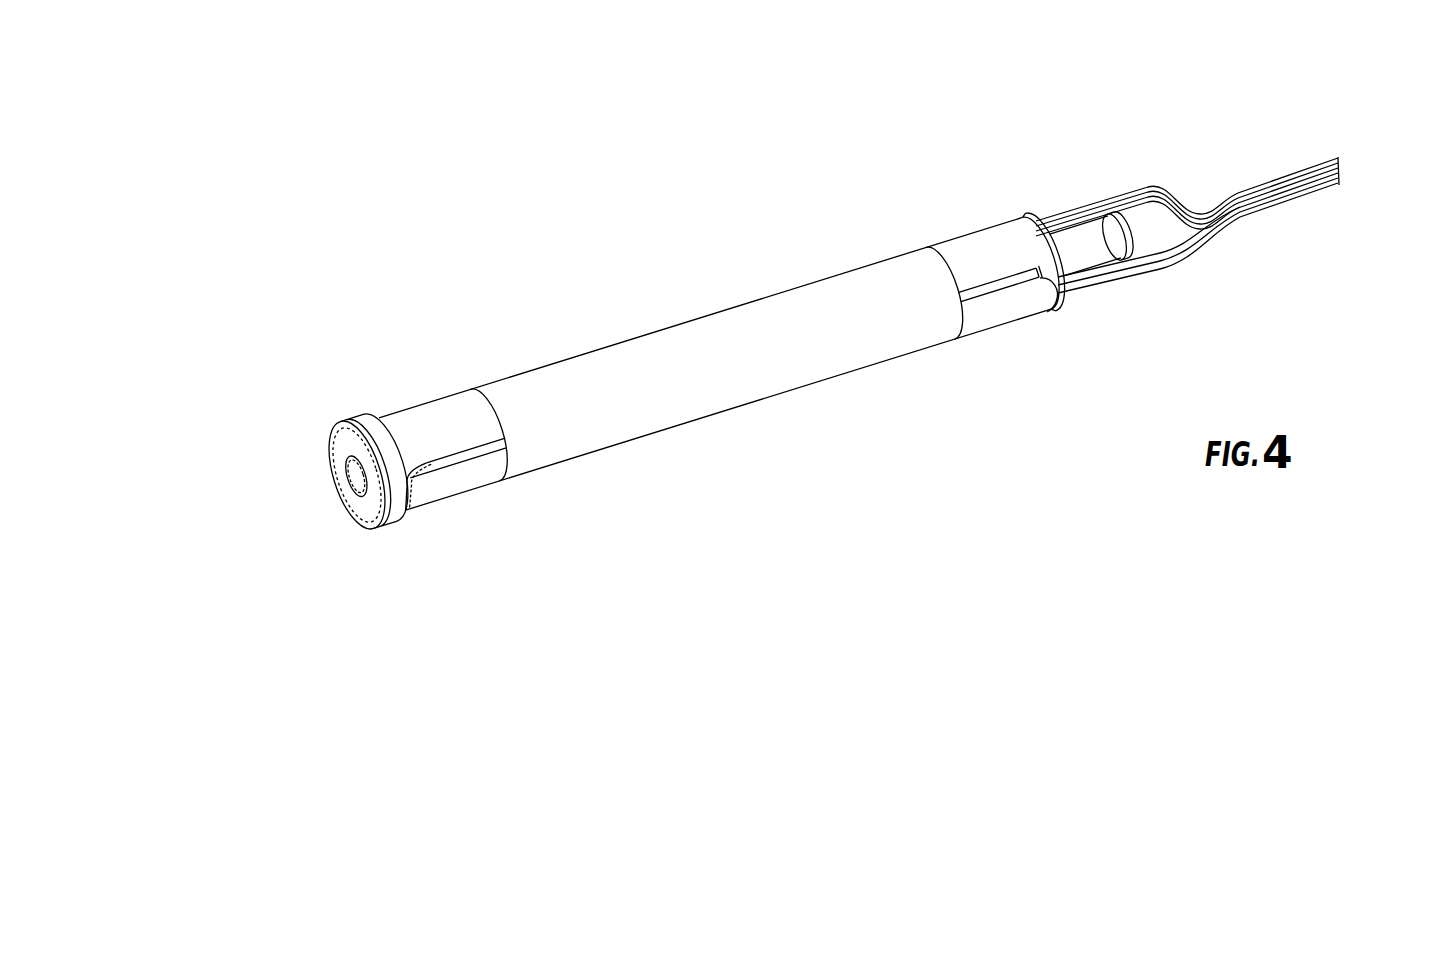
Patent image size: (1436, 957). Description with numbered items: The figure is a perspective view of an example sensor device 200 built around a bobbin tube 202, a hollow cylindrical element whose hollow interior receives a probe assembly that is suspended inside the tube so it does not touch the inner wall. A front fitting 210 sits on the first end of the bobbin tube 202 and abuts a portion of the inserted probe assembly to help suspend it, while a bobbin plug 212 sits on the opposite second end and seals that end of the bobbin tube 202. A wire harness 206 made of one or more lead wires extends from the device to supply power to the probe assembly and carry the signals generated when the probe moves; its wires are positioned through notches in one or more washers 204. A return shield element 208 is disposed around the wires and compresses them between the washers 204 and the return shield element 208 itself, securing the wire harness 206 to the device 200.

The sensor device 200 is at (228, 166).
The bobbin tube 202 is at (340, 480).
The washers 204 is at (430, 472).
The wire harness 206 is at (1355, 158).
The return shield element 208 is at (415, 409).
The front fitting 210 is at (335, 414).
The bobbin plug 212 is at (1138, 222).